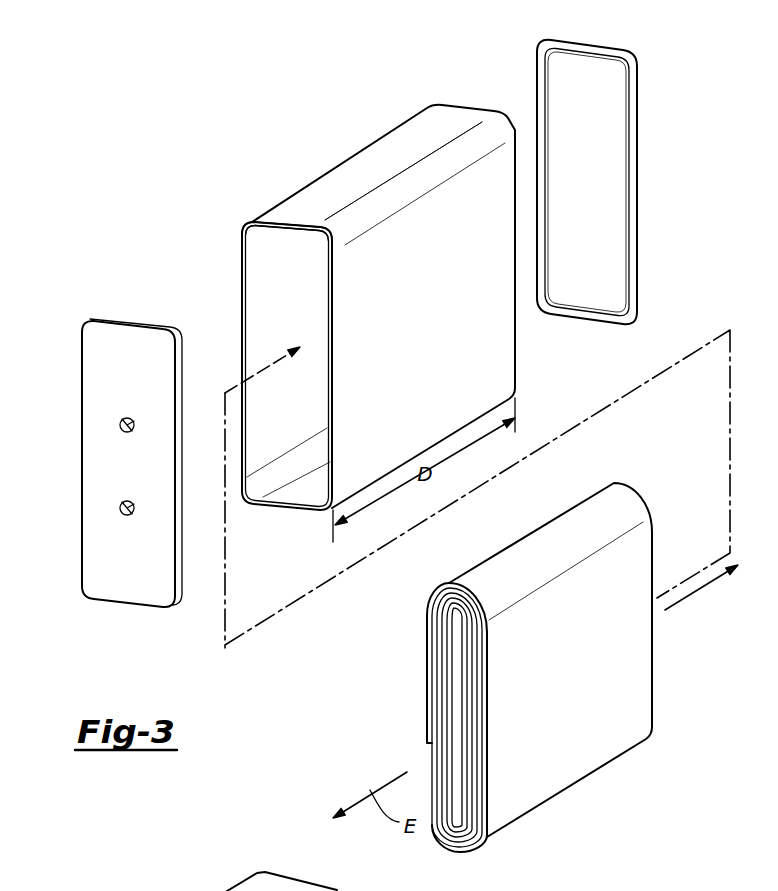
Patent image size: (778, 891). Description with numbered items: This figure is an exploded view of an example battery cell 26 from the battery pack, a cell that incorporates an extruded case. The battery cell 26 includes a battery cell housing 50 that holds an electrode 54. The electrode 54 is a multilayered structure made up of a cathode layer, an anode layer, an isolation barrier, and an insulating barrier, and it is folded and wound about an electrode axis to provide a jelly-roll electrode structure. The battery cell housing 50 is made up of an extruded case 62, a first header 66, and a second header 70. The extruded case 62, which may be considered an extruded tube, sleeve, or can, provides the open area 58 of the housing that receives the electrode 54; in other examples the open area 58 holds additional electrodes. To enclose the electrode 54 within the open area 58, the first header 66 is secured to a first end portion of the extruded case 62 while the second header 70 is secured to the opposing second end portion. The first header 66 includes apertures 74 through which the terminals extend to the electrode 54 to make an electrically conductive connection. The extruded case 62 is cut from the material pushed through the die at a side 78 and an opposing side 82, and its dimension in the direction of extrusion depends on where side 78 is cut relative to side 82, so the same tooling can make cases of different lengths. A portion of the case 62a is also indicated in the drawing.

The battery cell 26 is at (285, 694).
The battery cell housing 50 is at (655, 116).
The electrode 54 is at (685, 523).
The open area 58 is at (268, 255).
The extruded case 62 is at (323, 193).
The housing sleeve portion 62a is at (211, 885).
The first header 66 is at (132, 608).
The second header 70 is at (583, 32).
The apertures 74 is at (120, 428).
The side 78 is at (243, 225).
The opposing side 82 is at (468, 108).